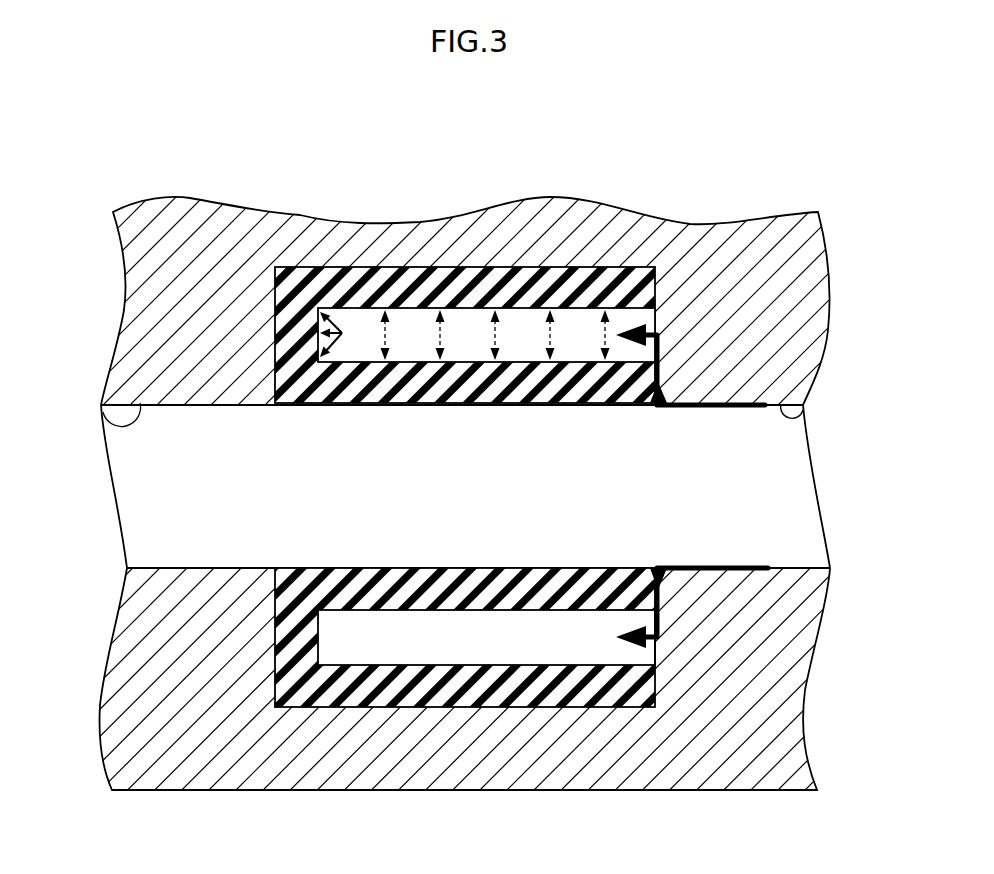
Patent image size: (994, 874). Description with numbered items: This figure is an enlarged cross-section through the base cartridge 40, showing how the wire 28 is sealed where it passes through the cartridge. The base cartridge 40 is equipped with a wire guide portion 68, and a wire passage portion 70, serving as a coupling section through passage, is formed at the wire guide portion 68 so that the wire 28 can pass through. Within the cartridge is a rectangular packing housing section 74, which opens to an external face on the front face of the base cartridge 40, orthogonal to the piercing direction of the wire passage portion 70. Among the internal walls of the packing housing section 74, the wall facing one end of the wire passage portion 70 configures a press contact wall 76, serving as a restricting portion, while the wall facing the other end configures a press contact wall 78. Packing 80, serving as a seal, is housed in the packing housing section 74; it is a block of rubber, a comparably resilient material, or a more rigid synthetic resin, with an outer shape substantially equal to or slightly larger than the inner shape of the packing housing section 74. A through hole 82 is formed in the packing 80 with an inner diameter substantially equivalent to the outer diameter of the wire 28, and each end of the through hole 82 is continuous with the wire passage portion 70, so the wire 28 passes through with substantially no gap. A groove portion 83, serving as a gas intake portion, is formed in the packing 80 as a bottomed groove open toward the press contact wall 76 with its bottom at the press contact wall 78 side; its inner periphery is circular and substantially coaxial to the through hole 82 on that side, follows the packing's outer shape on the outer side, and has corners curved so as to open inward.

The base cartridge 40 is at (583, 158).
The wire guide portion 68 is at (742, 240).
The wire passage portion 70 is at (102, 413).
The wire 28 is at (128, 534).
The press contact wall 78 is at (283, 305).
The packing 80 is at (365, 275).
The through hole 82 is at (322, 405).
The groove portion 83 is at (393, 362).
The packing housing section 74 is at (398, 680).
The press contact wall 76 is at (655, 668).